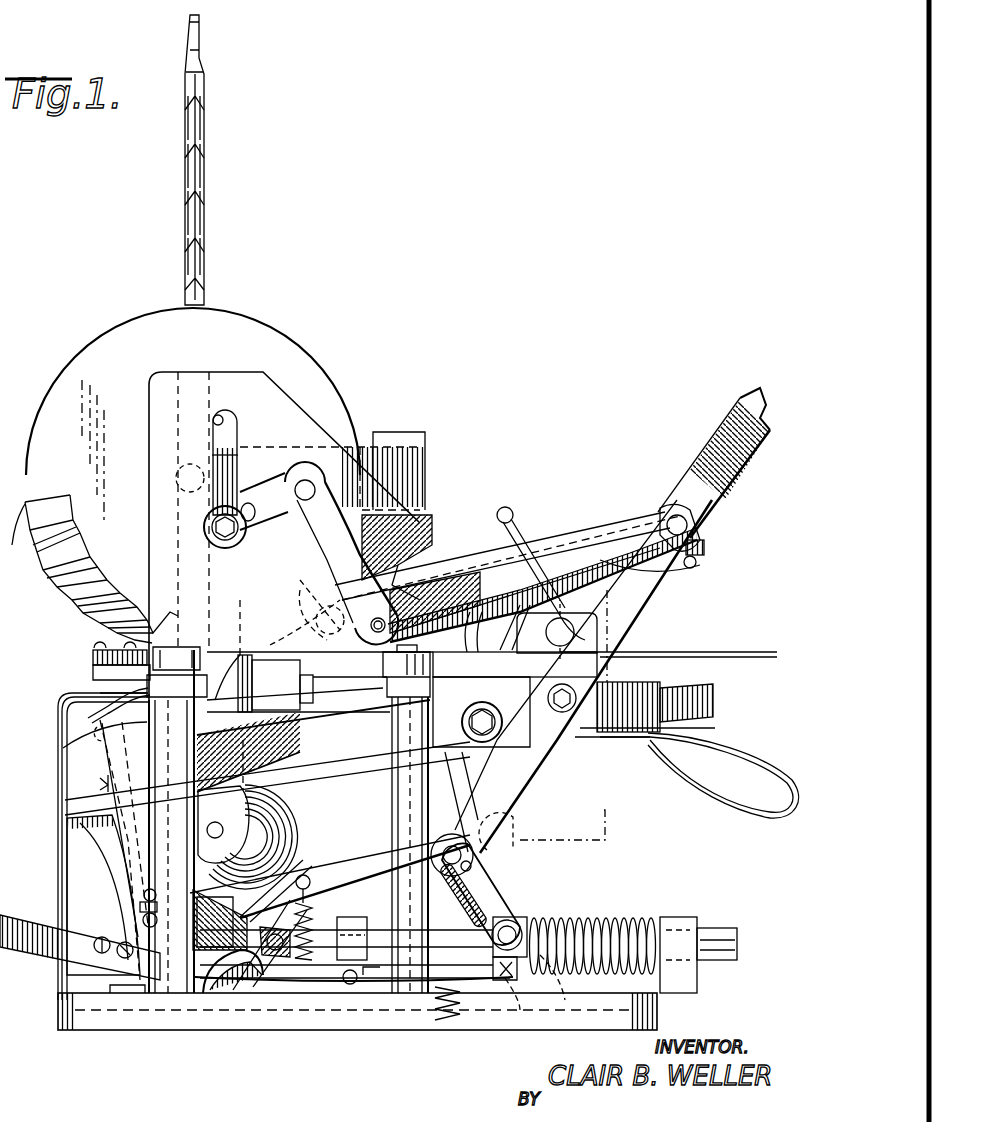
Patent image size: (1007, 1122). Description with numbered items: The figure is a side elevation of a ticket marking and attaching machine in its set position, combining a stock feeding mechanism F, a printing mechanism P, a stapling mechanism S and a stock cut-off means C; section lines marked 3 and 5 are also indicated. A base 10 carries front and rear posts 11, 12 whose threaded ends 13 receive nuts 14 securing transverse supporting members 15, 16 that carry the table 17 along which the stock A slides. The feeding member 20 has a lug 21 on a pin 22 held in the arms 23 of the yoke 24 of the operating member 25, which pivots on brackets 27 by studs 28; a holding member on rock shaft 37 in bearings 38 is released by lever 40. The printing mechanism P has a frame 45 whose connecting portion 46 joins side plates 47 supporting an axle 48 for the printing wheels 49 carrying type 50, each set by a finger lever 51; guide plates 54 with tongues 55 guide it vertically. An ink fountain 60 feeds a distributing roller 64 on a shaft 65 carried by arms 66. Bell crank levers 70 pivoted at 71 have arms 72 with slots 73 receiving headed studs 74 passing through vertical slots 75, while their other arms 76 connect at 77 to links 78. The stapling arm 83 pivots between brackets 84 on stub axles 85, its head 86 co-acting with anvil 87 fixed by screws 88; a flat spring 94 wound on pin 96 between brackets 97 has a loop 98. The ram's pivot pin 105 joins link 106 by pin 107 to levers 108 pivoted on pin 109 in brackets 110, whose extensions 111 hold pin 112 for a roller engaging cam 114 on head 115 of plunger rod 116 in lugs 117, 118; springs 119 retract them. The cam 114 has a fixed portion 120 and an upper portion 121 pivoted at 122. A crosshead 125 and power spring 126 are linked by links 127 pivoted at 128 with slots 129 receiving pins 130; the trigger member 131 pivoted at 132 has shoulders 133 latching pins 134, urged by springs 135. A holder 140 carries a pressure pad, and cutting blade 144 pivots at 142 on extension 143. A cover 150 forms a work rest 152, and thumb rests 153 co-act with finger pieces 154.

The base 10 is at (70, 1012).
The front posts 11 is at (168, 992).
The rear posts 12 is at (410, 995).
The threaded upper ends of posts 13 is at (150, 640).
The nuts 14 is at (60, 672).
The transverse supporting member 15 is at (63, 748).
The transverse supporting member 16 is at (395, 688).
The table 17 is at (448, 598).
The feeding member 20 is at (575, 592).
The lug 21 is at (704, 548).
The pin 22 is at (688, 524).
The arms 23 is at (662, 580).
The yoke 24 is at (700, 456).
The operating member 25 is at (748, 425).
The brackets 27 is at (592, 690).
The studs 28 is at (580, 740).
The rock shaft 37 is at (578, 635).
The bearings 38 is at (612, 628).
The releasing lever 40 is at (506, 507).
The frame 45 is at (368, 440).
The connecting portion 46 is at (415, 440).
The side plates 47 is at (225, 460).
The axle 48 is at (185, 477).
The printing wheels 49 is at (75, 375).
The type 50 is at (17, 538).
The finger lever 51 is at (193, 170).
The guide plates 54 is at (255, 372).
The tongues 55 is at (212, 380).
The ink fountain 60 is at (428, 518).
The distributing roller 64 is at (318, 592).
The shaft 65 is at (322, 605).
The arms 66 is at (515, 641).
The bell crank levers 70 is at (312, 460).
The pivot 71 is at (303, 470).
The arms 72 is at (272, 495).
The slots 73 is at (247, 503).
The headed studs 74 is at (222, 545).
The vertical slots 75 is at (216, 418).
The arms 76 is at (423, 548).
The pivot connection 77 is at (395, 610).
The links 78 is at (614, 540).
The arm 83 is at (358, 762).
The brackets 84 is at (448, 760).
The stub axles 85 is at (463, 745).
The head 86 is at (103, 779).
The anvil 87 is at (93, 658).
The screws 88 is at (100, 645).
The flat spring 94 is at (285, 830).
The fixed pin 96 is at (225, 825).
The brackets 97 is at (230, 830).
The finger-receiving loop 98 is at (730, 805).
The pivot pin 105 is at (143, 892).
The link 106 is at (140, 905).
The pin 107 is at (143, 920).
The levers 108 is at (352, 865).
The pin 109 is at (520, 850).
The brackets 110 is at (522, 830).
The lateral extensions 111 is at (210, 995).
The pin 112 is at (235, 992).
The cam 114 is at (255, 995).
The head 115 is at (337, 995).
The plunger rod 116 is at (722, 935).
The bearing lug 117 is at (350, 918).
The bearing lug 118 is at (685, 917).
The coil springs 119 is at (315, 932).
The lower fixed cam portion 120 is at (215, 985).
The upper cam portion 121 is at (295, 858).
The pivot 122 is at (283, 952).
The crosshead 125 is at (500, 985).
The power coil spring 126 is at (628, 915).
The links 127 is at (520, 900).
The pivot connection 128 is at (522, 918).
The slots 129 is at (450, 905).
The pins 130 is at (450, 840).
The trigger member 131 is at (22, 942).
The pivot 132 is at (352, 985).
The latching shoulders 133 is at (535, 1003).
The pins 134 is at (577, 991).
The springs 135 is at (448, 995).
The holder 140 is at (240, 660).
The pivot 142 is at (312, 675).
The lateral extension 143 is at (271, 683).
The cutting blade 144 is at (265, 738).
The cover 150 is at (97, 734).
The work rest 152 is at (118, 690).
The thumb rests 153 is at (67, 824).
The finger pieces 154 is at (86, 714).
The stock A is at (738, 656).
The stock cut-off means C is at (295, 704).
The stock feeding mechanism F is at (600, 560).
The marking or printing mechanism P is at (46, 588).
The attaching or stapling mechanism S is at (352, 762).
The section line 3 is at (244, 612).
The section line 5 is at (620, 612).